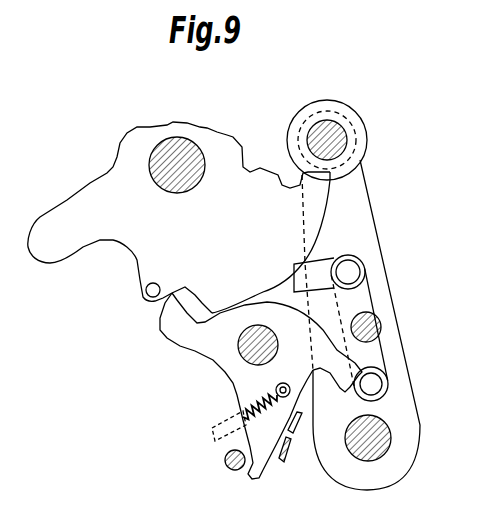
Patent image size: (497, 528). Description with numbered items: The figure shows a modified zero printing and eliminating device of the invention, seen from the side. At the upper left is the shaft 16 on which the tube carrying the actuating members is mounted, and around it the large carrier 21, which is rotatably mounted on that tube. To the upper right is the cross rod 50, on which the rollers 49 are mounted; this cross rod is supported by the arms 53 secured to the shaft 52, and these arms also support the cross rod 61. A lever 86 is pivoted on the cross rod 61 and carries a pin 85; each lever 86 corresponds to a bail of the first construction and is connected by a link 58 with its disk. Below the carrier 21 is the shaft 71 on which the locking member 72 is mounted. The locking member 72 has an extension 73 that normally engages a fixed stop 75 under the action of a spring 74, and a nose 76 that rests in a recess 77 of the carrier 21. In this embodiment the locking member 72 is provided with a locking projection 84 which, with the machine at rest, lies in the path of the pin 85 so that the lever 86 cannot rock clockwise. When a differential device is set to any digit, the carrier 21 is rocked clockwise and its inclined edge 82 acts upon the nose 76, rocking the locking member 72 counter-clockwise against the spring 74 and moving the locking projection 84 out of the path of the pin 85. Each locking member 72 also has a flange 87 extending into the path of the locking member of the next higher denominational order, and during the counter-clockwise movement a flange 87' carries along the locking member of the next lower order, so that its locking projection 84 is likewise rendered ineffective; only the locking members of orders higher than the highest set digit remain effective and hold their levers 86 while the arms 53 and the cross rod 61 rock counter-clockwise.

The shaft 16 is at (191, 150).
The carrier 21 is at (118, 232).
The roller 49 is at (364, 137).
The cross rod 50 is at (340, 133).
The shaft 52 is at (388, 433).
The arm 53 is at (357, 220).
The link 58 is at (315, 272).
The cross rod 61 is at (382, 327).
The shaft 71 is at (268, 330).
The locking member 72 is at (213, 353).
The extension 73 is at (257, 474).
The spring 74 is at (236, 415).
The fixed stop 75 is at (225, 458).
The nose 76 is at (168, 298).
The recess 77 is at (185, 288).
The inclined edge 82 is at (208, 303).
The locking projection 84 is at (353, 384).
The pin 85 is at (377, 385).
The lever 86 is at (368, 300).
The flange 87 is at (303, 422).
The flange 87' is at (297, 449).